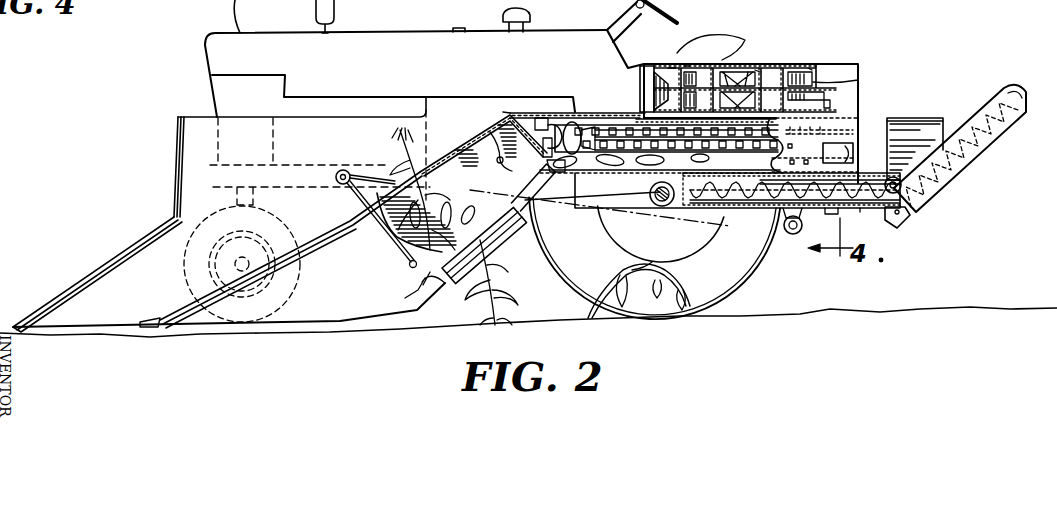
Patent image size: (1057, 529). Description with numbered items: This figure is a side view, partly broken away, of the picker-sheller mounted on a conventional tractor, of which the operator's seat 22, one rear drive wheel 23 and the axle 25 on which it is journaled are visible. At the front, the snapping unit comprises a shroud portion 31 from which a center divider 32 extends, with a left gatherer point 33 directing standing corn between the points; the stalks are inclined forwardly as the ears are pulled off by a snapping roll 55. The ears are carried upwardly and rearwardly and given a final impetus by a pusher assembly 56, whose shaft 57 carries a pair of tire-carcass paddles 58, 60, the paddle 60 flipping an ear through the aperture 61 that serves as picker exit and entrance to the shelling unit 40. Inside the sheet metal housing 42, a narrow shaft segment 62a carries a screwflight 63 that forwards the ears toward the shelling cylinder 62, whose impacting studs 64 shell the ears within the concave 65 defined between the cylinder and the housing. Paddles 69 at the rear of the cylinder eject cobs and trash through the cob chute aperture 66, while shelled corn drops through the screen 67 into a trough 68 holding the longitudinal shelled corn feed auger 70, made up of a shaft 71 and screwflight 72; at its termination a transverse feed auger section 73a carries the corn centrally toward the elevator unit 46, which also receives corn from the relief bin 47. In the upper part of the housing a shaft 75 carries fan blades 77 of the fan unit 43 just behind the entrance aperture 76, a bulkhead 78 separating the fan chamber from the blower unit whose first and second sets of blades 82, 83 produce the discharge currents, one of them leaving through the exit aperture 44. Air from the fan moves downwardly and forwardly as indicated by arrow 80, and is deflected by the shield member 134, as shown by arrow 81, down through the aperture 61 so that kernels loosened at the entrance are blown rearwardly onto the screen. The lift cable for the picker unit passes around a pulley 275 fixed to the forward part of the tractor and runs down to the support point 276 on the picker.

The seat 22 is at (730, 38).
The rear drive wheel 23 is at (760, 270).
The axle 25 is at (652, 199).
The shroud portion 31 is at (195, 147).
The center divider 32 is at (38, 305).
The left gatherer point 33 is at (175, 308).
The shelling unit 40 is at (878, 27).
The housing 42 is at (858, 64).
The fan unit 43 is at (658, 58).
The aperture 44 is at (818, 123).
The elevator unit 46 is at (988, 150).
The relief bin 47 is at (941, 118).
The snapping roll 55 is at (488, 250).
The pusher assembly 56 is at (475, 150).
The shaft 57 is at (425, 181).
The paddle 58 is at (487, 133).
The paddle 60 is at (500, 200).
The aperture 61 is at (556, 167).
The shelling cylinder 62 is at (828, 138).
The shaft segment 62a is at (576, 124).
The screwflight 63 is at (558, 128).
The impacting studs 64 is at (623, 124).
The concave 65 is at (760, 135).
The aperture 66 is at (854, 153).
The screen 67 is at (830, 215).
The trough 68 is at (783, 227).
The paddles 69 is at (935, 115).
The longitudinal shelled corn feed auger 70 is at (702, 209).
The shaft 71 is at (668, 204).
The screwflight 72 is at (858, 213).
The transverse feed auger section 73a is at (908, 205).
The shaft 75 is at (858, 80).
The entrance aperture 76 is at (643, 80).
The fan blades 77 is at (668, 67).
The bulkhead 78 is at (686, 65).
The arrow 80 is at (670, 112).
The arrow 81 is at (535, 128).
The first set of blades 82 is at (757, 69).
The second set of blades 83 is at (808, 68).
The shield member 134 is at (503, 112).
The pulley 275 is at (343, 170).
The support point 276 is at (408, 264).